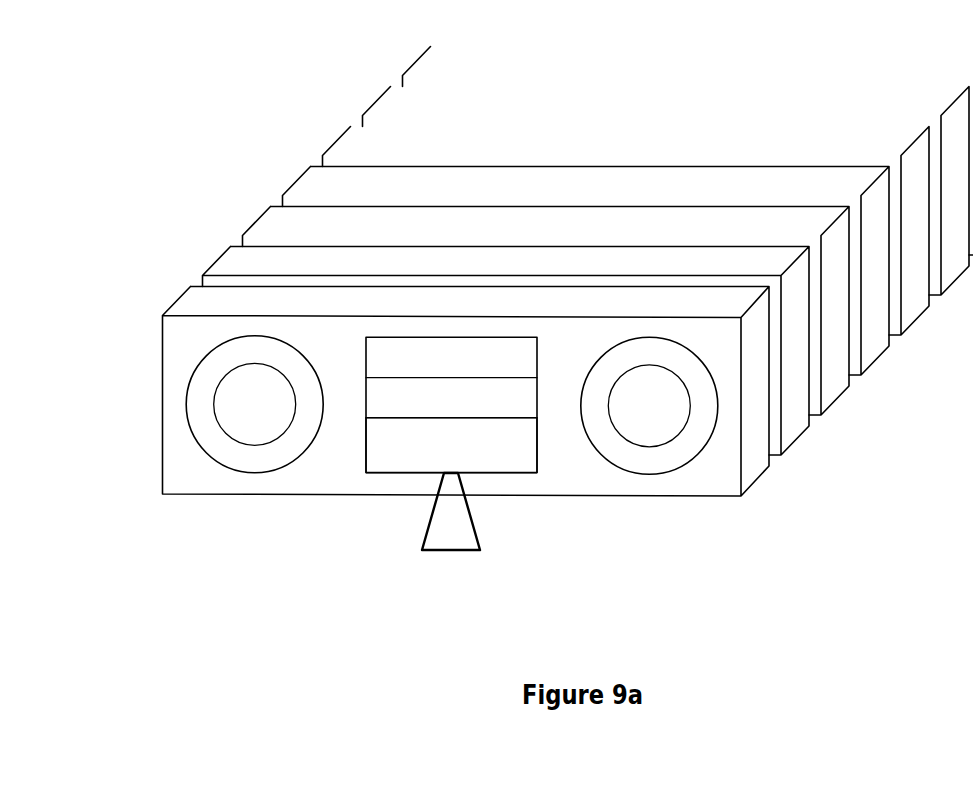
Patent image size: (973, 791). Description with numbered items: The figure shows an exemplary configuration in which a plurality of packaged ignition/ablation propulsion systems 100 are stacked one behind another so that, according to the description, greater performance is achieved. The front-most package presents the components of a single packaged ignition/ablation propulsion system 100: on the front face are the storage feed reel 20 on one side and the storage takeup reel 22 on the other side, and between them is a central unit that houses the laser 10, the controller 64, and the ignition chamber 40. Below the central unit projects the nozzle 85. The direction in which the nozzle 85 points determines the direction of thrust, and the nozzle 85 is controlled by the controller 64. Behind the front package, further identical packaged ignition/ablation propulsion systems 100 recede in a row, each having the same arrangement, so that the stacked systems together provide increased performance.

The ignition/ablation propulsion system 100 is at (162, 340).
The storage feed reel 20 is at (202, 427).
The storage takeup reel 22 is at (690, 445).
The laser 10 is at (374, 404).
The controller 64 is at (519, 364).
The ignition chamber 40 is at (493, 458).
The nozzle 85 is at (451, 554).